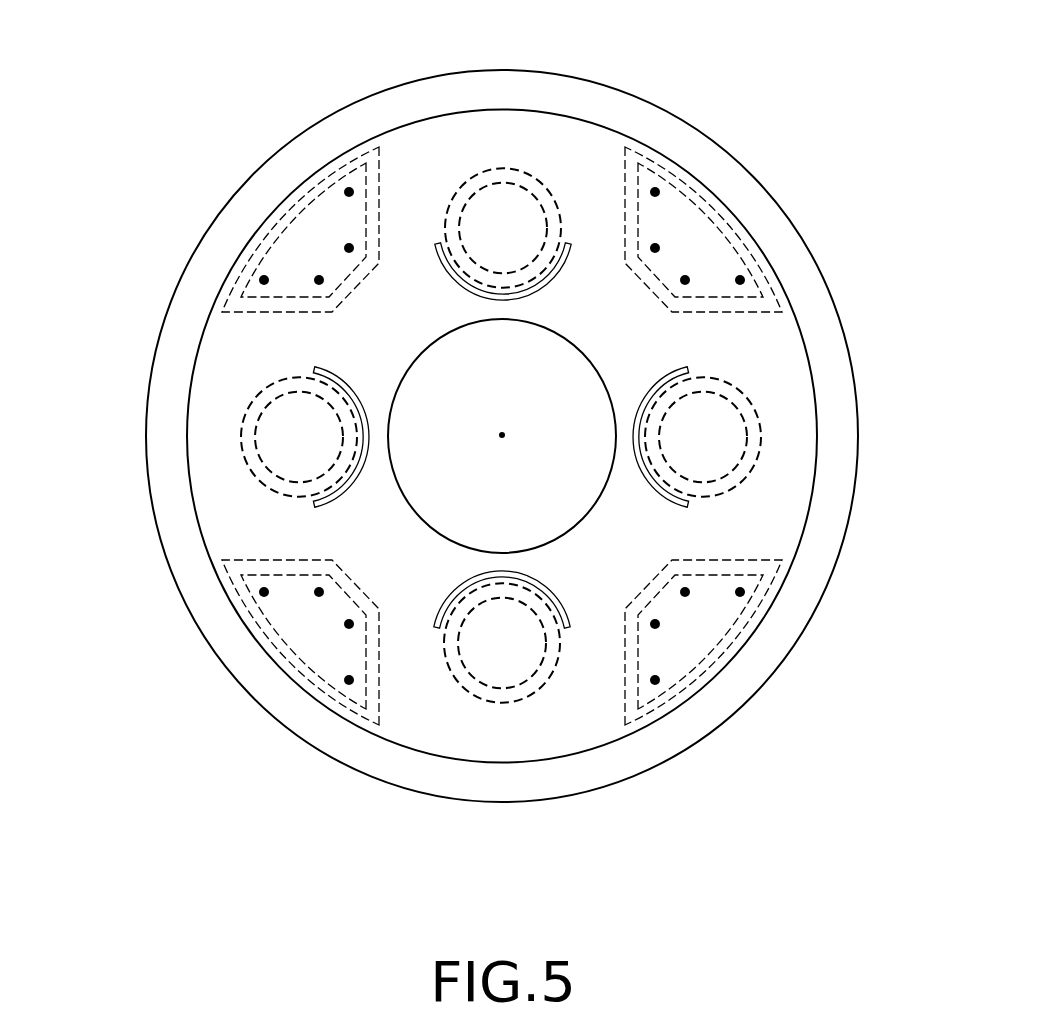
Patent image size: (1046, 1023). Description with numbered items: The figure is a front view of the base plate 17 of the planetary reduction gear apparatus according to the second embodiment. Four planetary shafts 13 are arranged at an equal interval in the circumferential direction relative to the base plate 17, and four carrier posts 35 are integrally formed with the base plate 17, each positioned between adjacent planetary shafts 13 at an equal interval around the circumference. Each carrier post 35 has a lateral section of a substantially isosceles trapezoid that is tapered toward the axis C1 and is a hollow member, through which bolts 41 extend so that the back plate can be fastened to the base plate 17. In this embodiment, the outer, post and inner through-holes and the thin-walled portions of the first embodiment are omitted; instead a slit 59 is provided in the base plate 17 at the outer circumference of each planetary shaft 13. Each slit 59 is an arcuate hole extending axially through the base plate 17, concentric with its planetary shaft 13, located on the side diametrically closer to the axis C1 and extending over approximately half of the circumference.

The planetary shaft 13 is at (503, 170).
The base plate 17 is at (588, 158).
The carrier post 35 is at (273, 223).
The bolt 41 is at (740, 592).
The slit 59 is at (533, 294).
The axis C1 is at (502, 435).